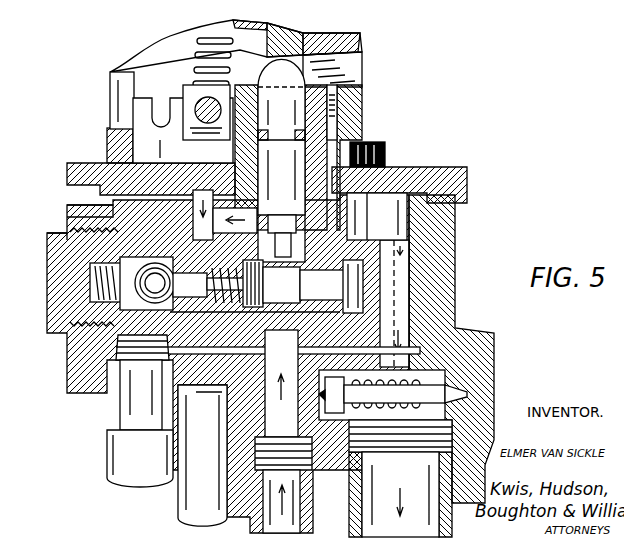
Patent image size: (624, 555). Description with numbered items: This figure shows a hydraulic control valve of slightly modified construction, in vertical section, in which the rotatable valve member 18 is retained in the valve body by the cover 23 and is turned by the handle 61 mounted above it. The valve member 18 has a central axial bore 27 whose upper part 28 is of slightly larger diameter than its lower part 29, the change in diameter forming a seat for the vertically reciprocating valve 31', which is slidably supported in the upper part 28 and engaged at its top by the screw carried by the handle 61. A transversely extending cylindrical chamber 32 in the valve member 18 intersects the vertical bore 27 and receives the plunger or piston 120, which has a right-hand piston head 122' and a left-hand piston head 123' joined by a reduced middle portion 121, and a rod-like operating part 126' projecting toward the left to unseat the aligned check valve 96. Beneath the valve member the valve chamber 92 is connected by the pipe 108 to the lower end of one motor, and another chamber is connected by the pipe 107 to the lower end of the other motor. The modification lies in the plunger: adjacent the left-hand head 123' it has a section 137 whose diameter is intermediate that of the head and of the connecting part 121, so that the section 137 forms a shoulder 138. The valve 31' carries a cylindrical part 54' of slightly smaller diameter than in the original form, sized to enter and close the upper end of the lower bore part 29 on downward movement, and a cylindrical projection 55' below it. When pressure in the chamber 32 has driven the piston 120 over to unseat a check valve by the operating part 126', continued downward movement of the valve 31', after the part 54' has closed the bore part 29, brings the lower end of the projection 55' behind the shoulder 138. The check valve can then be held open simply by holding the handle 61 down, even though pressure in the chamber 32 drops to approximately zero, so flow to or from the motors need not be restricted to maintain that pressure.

The handle 61 is at (335, 40).
The valve 31' is at (352, 69).
The upper part of the bore 28 is at (378, 170).
The cover 23 is at (85, 163).
The check valve 96 is at (113, 216).
The valve chamber 92 is at (67, 227).
The operating part 126' is at (228, 364).
The cylindrical part 54' is at (281, 160).
The cylindrical projection 55' is at (270, 215).
The valve member 18 is at (358, 213).
The chamber 32 is at (356, 240).
The reduced middle portion 121 is at (278, 228).
The right-hand piston head 122' is at (450, 300).
The piston 120 is at (385, 308).
The shoulder 138 is at (306, 284).
The section 137 is at (331, 286).
The left-hand piston head 123' is at (255, 323).
The central axial bore 27 is at (312, 331).
The lower part of the bore 29 is at (275, 361).
The pipe 108 is at (115, 448).
The pipe 107 is at (185, 500).